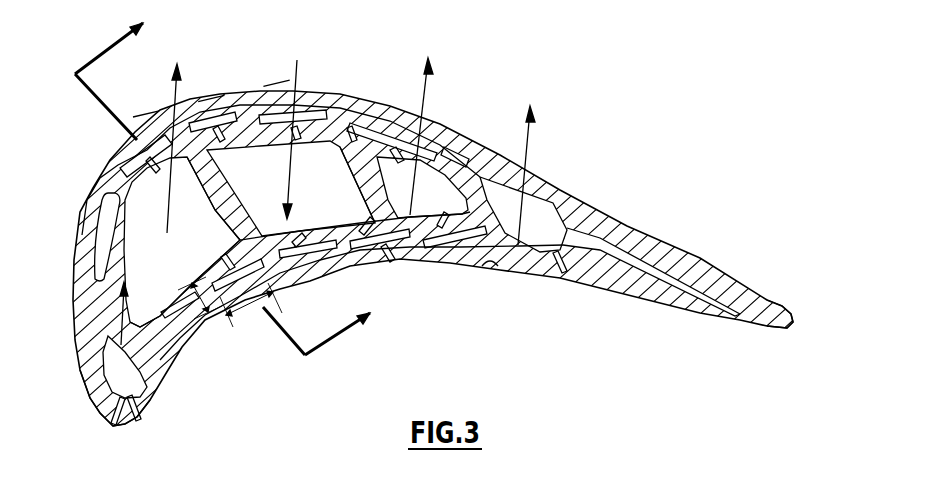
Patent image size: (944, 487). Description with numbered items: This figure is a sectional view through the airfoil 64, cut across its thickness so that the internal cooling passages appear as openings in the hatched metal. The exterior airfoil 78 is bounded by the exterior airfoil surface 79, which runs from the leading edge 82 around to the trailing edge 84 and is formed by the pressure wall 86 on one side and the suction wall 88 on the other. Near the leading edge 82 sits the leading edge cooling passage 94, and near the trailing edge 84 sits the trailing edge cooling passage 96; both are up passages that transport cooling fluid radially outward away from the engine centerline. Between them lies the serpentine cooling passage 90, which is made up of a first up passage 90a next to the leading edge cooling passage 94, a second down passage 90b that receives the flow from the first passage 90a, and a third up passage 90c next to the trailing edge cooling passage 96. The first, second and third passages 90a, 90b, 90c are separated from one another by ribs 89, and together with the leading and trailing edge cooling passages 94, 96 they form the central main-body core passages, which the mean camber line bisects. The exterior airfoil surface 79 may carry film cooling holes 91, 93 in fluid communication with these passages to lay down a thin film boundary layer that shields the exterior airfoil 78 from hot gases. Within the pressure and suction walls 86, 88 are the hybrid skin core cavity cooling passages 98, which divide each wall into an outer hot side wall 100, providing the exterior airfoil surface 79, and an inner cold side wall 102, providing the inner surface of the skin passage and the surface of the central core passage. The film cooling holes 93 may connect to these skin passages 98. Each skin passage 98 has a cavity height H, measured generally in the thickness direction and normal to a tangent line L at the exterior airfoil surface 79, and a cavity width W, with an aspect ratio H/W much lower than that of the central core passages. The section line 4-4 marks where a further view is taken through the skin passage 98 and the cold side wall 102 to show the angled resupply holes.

The airfoil 64 is at (613, 117).
The exterior airfoil 78 is at (627, 281).
The exterior airfoil surface 79 is at (650, 232).
The leading edge 82 is at (114, 428).
The trailing edge 84 is at (800, 323).
The pressure wall 86 is at (424, 252).
The suction wall 88 is at (450, 150).
The ribs 89 is at (212, 185).
The serpentine cooling passage 90 is at (318, 156).
The first passage 90a is at (217, 250).
The second passage 90b is at (357, 202).
The third passage 90c is at (462, 216).
The film cooling holes 91 is at (130, 422).
The film cooling holes 93 is at (498, 268).
The leading edge cooling passage 94 is at (135, 384).
The trailing edge cooling passage 96 is at (540, 217).
The hybrid skin core cavity cooling passages 98 is at (376, 136).
The hot side wall 100 is at (294, 268).
The cold side wall 102 is at (277, 232).
The tangent line L is at (258, 83).
The cavity height H is at (185, 285).
The cavity width W is at (262, 330).
The section line 4- 4 is at (229, 177).